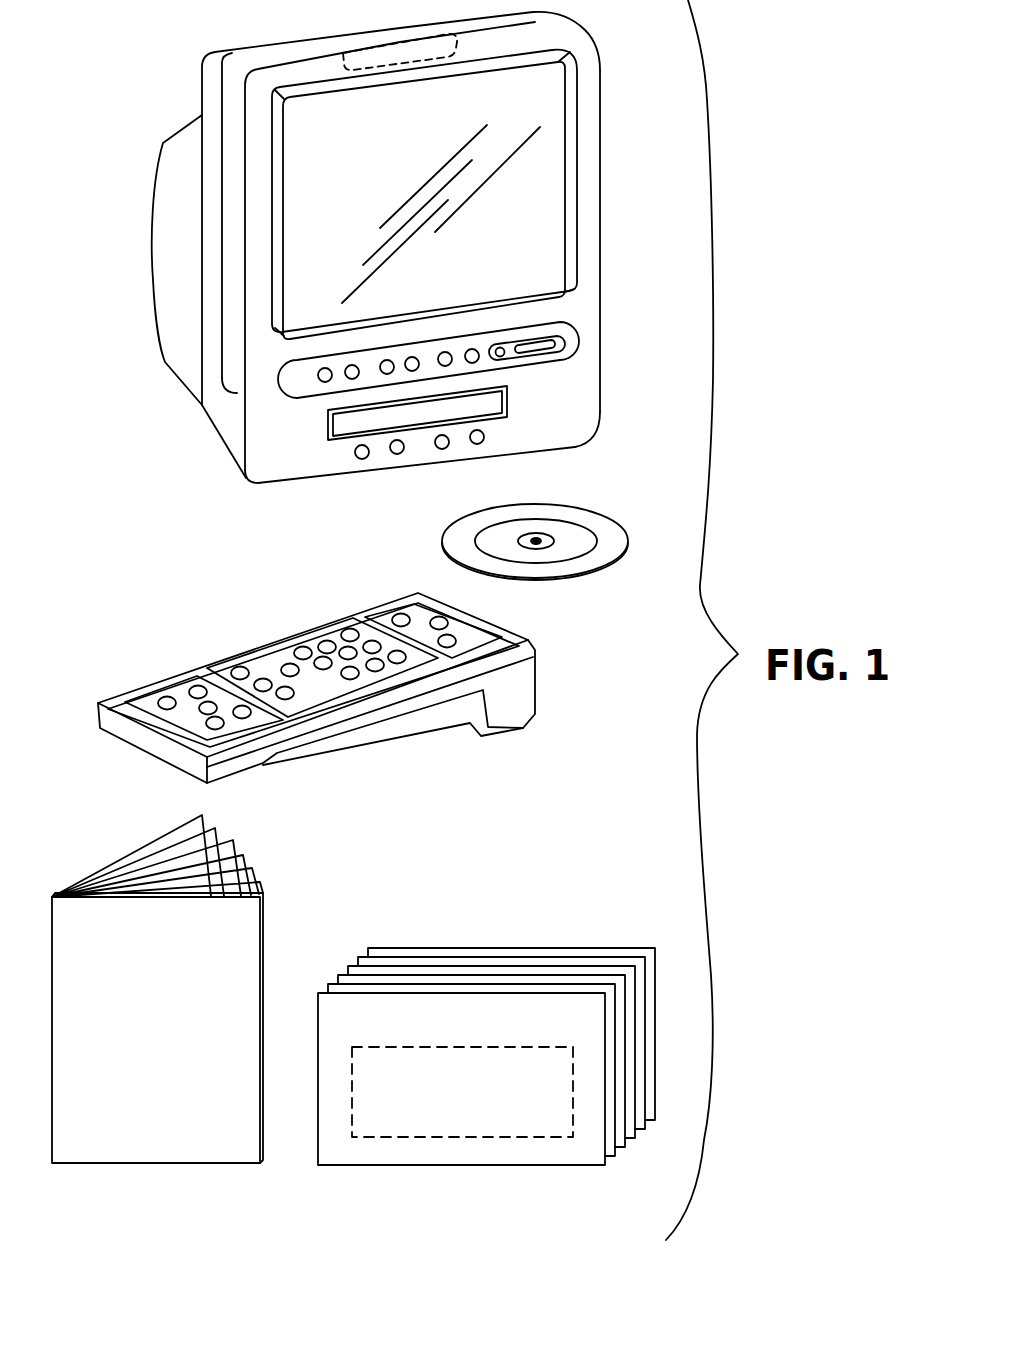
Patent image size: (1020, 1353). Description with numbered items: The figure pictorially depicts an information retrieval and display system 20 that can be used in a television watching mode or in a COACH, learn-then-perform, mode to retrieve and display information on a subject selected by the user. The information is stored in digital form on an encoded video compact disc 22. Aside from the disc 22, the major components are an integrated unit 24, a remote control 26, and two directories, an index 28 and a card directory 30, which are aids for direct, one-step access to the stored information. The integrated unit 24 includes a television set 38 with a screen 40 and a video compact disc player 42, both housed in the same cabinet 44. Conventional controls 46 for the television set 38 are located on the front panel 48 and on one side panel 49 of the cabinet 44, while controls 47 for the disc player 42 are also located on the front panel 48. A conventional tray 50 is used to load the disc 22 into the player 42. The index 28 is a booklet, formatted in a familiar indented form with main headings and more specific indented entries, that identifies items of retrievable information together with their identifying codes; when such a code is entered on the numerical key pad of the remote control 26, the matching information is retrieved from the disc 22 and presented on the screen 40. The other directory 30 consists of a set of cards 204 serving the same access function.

The system 20 is at (749, 188).
The integrated unit 24 is at (147, 64).
The cabinet 44 is at (136, 230).
The television set 38 is at (620, 115).
The screen 40 is at (349, 143).
The side panel 49 is at (603, 292).
The controls 46 is at (606, 345).
The video compact disc player 42 is at (536, 398).
The tray 50 is at (330, 418).
The controls 47 is at (513, 444).
The front panel 48 is at (290, 466).
The video compact disc 22 is at (424, 548).
The remote control 26 is at (267, 618).
The index 28 is at (117, 831).
The directory 30 is at (549, 1021).
The cards 204 is at (622, 1080).